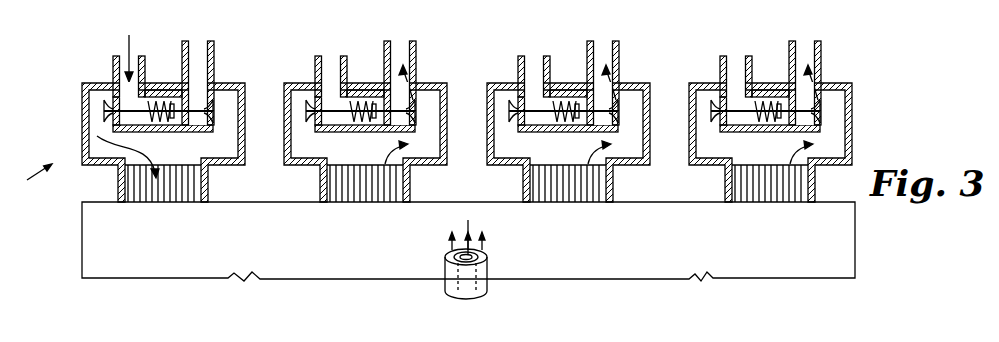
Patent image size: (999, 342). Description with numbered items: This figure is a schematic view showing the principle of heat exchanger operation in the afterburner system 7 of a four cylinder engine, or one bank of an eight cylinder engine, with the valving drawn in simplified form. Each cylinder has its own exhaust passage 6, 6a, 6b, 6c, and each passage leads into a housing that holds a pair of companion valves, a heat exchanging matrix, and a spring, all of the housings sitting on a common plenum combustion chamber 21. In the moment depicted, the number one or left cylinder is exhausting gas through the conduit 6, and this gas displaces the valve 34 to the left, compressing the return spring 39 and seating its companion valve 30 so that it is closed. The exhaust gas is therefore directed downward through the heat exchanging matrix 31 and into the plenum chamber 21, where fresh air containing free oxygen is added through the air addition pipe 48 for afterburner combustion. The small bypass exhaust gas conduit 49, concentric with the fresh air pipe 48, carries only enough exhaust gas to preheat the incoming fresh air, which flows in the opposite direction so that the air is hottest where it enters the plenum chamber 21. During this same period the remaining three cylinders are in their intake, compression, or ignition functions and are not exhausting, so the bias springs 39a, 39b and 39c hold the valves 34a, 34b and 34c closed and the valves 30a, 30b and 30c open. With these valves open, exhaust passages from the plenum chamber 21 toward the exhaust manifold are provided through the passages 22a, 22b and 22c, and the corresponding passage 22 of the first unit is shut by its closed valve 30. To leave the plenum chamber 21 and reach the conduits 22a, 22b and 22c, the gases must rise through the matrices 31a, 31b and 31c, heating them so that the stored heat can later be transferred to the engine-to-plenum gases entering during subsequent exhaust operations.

The exhaust passage 6 is at (113, 62).
The exhaust passage 6a is at (315, 66).
The exhaust passage 6b is at (517, 68).
The exhaust passage 6c is at (719, 68).
The afterburner system 7 is at (30, 173).
The plenum combustion chamber 21 is at (82, 262).
The passage 22 is at (214, 56).
The passage 22a is at (423, 79).
The passage 22b is at (626, 79).
The passage 22c is at (830, 79).
The valve 30 is at (214, 100).
The valve 30a is at (379, 130).
The valve 30b is at (583, 130).
The valve 30c is at (783, 130).
The heat exchanging matrix 31 is at (190, 200).
The heat exchanging matrix 31a is at (363, 196).
The heat exchanging matrix 31b is at (566, 200).
The heat exchanging matrix 31c is at (768, 200).
The valve 34 is at (104, 116).
The valve 34a is at (331, 146).
The valve 34b is at (536, 146).
The valve 34c is at (738, 146).
The return spring 39 is at (149, 92).
The bias spring 39a is at (367, 89).
The bias spring 39b is at (571, 89).
The bias spring 39c is at (773, 89).
The fresh air supply conduit 48 is at (455, 250).
The bypass exhaust gas conduit 49 is at (488, 266).